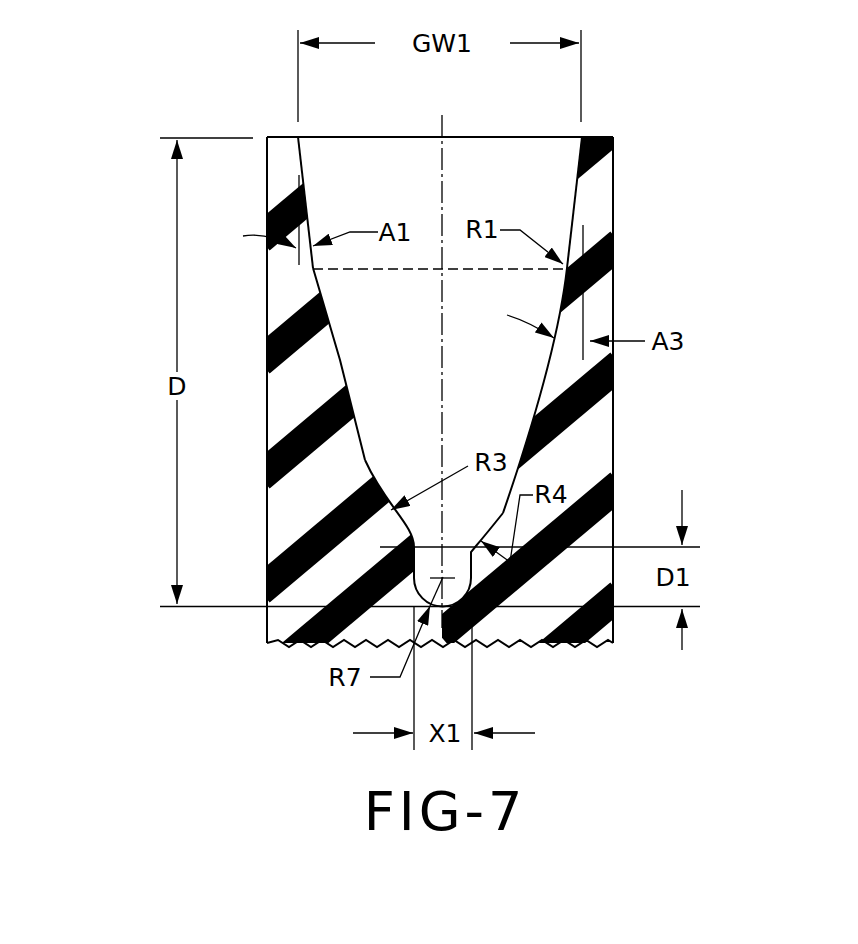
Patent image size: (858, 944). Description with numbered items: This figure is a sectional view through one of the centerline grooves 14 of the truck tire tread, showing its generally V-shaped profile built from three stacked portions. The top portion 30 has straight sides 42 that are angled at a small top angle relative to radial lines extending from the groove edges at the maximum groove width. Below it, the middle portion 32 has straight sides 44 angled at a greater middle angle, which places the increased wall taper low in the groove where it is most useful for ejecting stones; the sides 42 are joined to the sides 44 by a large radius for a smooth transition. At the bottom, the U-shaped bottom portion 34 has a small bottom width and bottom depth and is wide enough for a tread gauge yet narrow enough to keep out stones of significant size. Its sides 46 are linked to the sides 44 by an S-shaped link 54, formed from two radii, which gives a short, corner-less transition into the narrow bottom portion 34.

The centerline groove 14 is at (478, 408).
The top portion 30 is at (636, 212).
The middle portion 32 is at (636, 414).
The bottom portion 34 is at (710, 577).
The straight sides of the top portion 42 is at (306, 204).
The straight sides of the middle portion 44 is at (338, 358).
The sides of the bottom portion 46 is at (474, 566).
The S-shaped link 54 is at (380, 539).